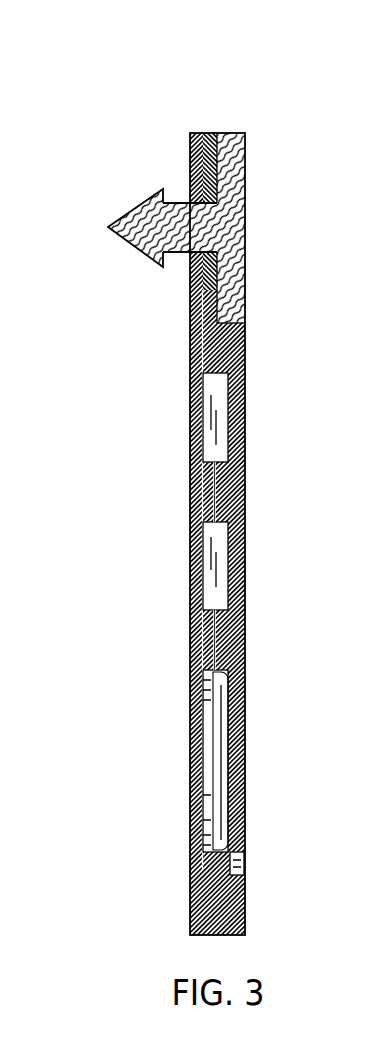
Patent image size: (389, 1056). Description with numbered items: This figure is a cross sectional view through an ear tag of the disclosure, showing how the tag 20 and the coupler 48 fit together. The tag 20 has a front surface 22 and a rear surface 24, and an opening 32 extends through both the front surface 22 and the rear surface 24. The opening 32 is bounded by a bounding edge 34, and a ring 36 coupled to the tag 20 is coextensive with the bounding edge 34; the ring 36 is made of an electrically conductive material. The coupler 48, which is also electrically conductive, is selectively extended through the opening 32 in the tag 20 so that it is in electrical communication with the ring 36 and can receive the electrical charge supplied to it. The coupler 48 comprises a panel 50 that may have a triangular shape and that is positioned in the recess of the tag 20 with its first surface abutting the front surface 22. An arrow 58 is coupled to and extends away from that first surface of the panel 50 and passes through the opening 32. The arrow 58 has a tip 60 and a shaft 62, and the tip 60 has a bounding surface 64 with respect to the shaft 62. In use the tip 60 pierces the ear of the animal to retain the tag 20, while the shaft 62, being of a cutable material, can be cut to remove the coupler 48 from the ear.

The tag 20 is at (190, 133).
The front surface 22 is at (245, 392).
The rear surface 24 is at (190, 407).
The opening 32 is at (230, 224).
The bounding edge 34 is at (245, 252).
The ring 36 is at (245, 318).
The coupler 48 is at (258, 124).
The panel 50 is at (245, 157).
The arrow 58 is at (130, 183).
The tip 60 is at (125, 212).
The shaft 62 is at (175, 252).
The bounding surface 64 is at (175, 203).